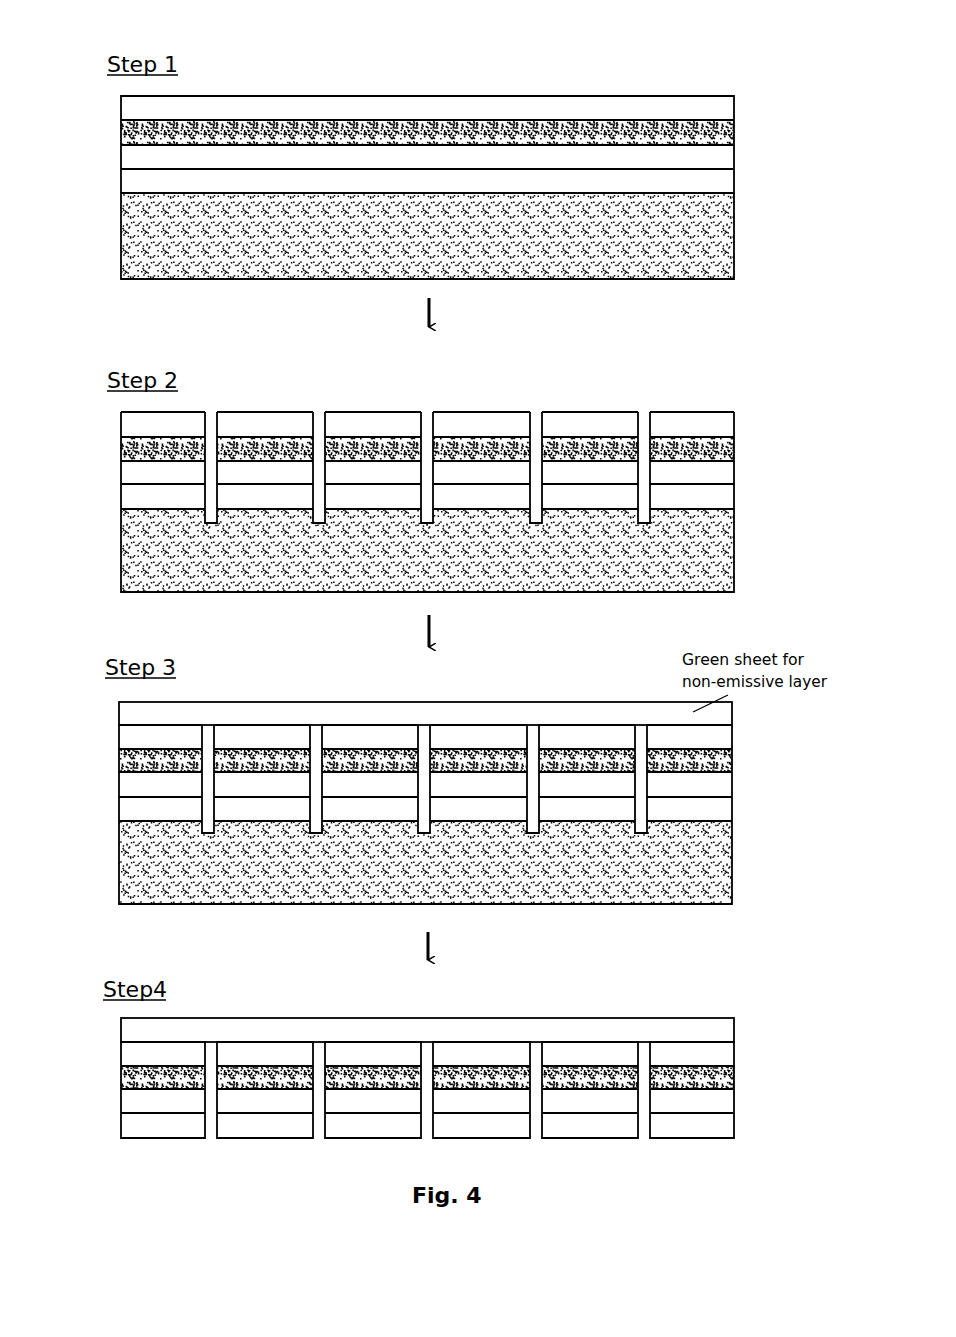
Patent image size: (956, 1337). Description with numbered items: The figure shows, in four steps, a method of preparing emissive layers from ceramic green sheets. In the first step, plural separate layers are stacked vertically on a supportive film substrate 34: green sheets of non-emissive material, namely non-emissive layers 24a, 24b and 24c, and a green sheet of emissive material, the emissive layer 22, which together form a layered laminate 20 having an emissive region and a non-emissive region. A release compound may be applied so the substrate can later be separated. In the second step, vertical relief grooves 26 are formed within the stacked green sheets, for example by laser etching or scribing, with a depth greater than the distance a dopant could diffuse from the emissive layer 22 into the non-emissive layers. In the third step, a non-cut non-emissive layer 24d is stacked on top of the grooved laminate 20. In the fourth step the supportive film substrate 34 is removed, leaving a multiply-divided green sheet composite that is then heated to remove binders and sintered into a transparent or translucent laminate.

The layered laminate 20 is at (600, 90).
The emissive layer 22 is at (733, 133).
The non-emissive layer 24a is at (728, 183).
The non-emissive layer 24b is at (728, 158).
The non-emissive layer 24c is at (725, 110).
The non-cut non-emissive layer 24d is at (132, 713).
The vertical relief grooves 26 is at (209, 420).
The supportive film substrate 34 is at (722, 237).